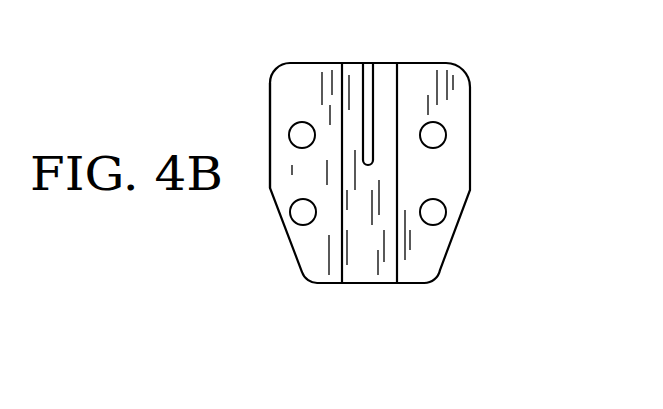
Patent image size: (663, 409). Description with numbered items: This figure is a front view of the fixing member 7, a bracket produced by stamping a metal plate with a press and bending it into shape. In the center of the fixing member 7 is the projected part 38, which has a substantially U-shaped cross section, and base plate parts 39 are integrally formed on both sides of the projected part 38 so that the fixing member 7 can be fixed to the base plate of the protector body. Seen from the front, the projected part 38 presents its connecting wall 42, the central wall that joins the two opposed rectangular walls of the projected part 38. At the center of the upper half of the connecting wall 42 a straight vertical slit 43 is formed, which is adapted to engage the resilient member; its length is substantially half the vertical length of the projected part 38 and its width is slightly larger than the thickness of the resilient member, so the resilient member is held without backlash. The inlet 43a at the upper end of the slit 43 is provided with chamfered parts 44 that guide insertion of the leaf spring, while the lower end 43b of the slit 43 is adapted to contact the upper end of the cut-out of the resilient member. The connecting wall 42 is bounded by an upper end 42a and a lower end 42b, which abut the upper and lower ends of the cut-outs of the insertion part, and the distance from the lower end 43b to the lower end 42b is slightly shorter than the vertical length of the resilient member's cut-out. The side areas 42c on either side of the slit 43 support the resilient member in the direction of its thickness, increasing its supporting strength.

The fixing member 7 is at (271, 62).
The chamfered parts 44 is at (363, 67).
The inlet 43a is at (371, 72).
The upper end of the connecting wall 42a is at (390, 62).
The side areas of the slit 42c is at (350, 92).
The slit 43 is at (370, 122).
The lower end of the slit 43b is at (375, 158).
The base plate parts 39 is at (427, 187).
The connecting wall 42 is at (357, 207).
The projected part 38 is at (398, 240).
The lower end of the connecting wall 42b is at (363, 283).